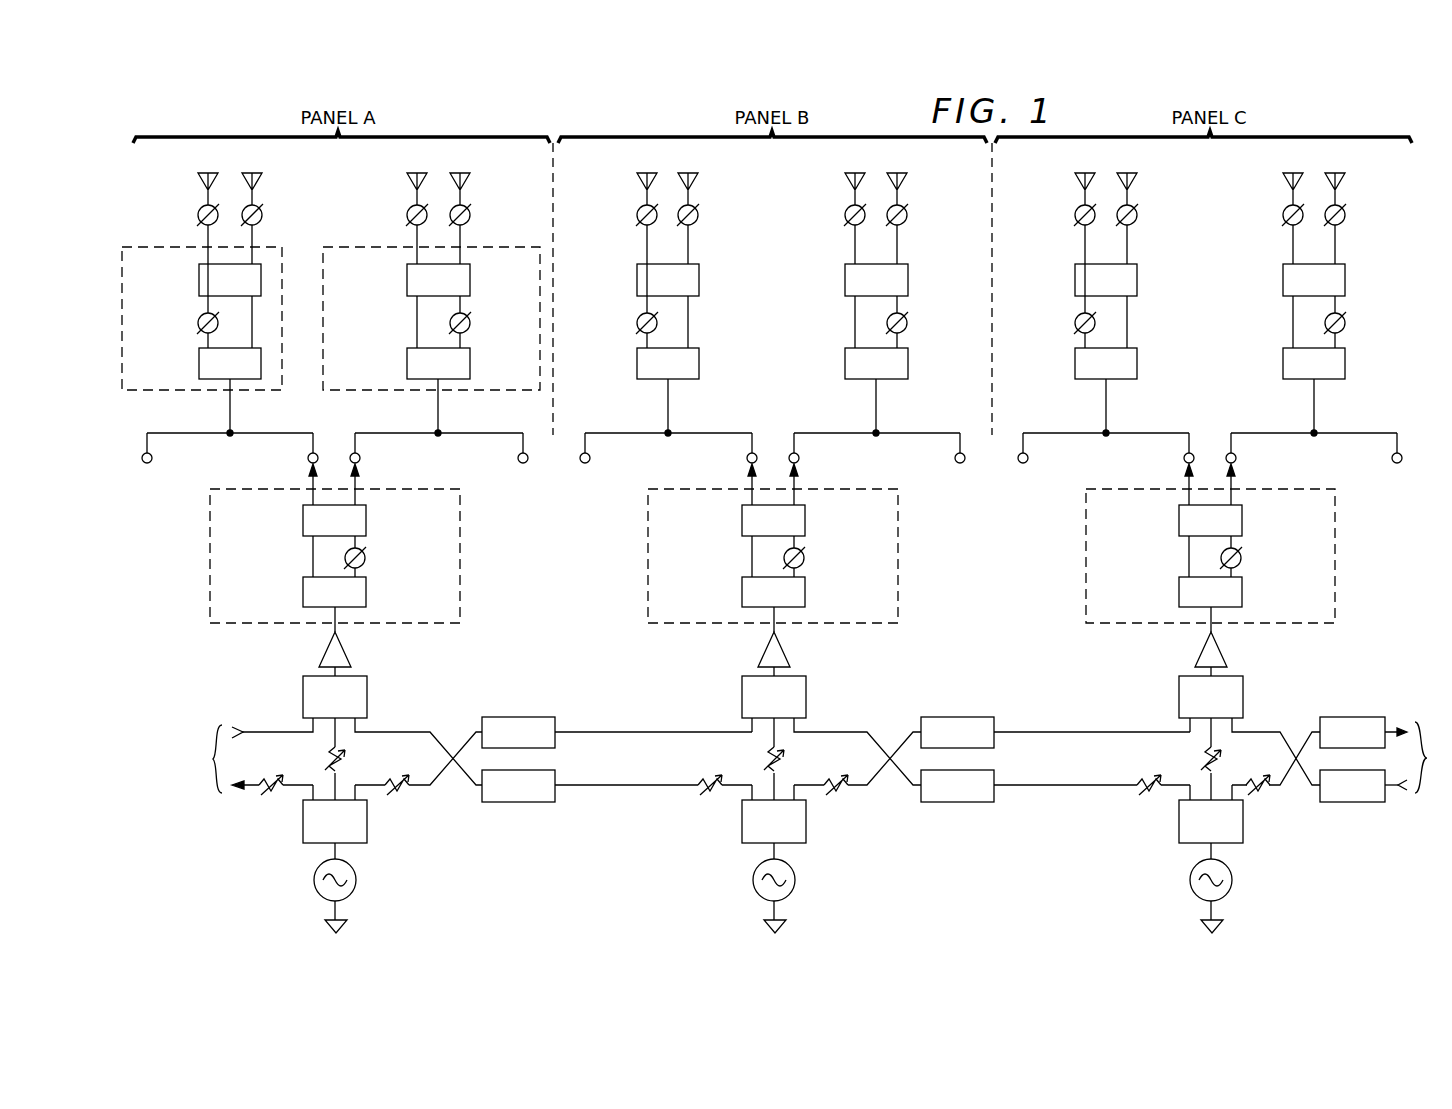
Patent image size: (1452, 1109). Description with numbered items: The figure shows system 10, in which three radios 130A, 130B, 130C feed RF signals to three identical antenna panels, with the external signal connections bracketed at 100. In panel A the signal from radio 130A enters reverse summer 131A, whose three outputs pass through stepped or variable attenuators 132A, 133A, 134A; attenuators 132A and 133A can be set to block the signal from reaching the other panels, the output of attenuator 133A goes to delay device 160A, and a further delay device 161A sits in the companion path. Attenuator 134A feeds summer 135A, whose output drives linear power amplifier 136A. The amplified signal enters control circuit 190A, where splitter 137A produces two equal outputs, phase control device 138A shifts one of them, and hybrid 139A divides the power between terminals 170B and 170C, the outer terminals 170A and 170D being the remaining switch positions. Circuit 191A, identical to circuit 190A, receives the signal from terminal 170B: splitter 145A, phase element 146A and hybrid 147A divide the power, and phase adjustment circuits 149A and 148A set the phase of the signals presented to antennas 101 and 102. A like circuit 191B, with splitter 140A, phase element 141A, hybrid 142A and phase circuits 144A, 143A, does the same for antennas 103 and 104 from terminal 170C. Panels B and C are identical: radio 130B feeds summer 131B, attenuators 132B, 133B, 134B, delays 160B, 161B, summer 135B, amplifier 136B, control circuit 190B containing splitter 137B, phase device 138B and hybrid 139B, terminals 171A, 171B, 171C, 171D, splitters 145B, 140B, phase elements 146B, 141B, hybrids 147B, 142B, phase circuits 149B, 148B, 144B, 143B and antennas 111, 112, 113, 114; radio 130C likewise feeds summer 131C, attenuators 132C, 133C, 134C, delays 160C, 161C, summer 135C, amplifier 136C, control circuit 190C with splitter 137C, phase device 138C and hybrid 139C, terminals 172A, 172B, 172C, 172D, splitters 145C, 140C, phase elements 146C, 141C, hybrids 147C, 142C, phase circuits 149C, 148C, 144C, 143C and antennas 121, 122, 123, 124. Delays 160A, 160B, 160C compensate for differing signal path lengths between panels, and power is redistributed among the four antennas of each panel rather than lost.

The system 10 is at (557, 128).
The beam ports 100 is at (809, 757).
The antenna 101 is at (198, 182).
The antenna 102 is at (262, 182).
The antenna 103 is at (407, 182).
The antenna 104 is at (470, 182).
The antenna element 111 is at (637, 182).
The antenna element 112 is at (698, 182).
The antenna element 113 is at (845, 182).
The antenna element 114 is at (907, 182).
The antenna element 121 is at (1075, 182).
The antenna element 122 is at (1137, 182).
The antenna element 123 is at (1283, 182).
The antenna element 124 is at (1345, 182).
The phase adjustment circuit 149A is at (198, 214).
The phase adjustment circuit 148A is at (262, 214).
The phase shifter 144A is at (407, 213).
The phase shifter 143A is at (470, 214).
The phase shifter 149B is at (637, 214).
The phase shifter 148B is at (698, 214).
The phase shifter 144B is at (845, 213).
The phase shifter 143B is at (907, 214).
The phase shifter 149C is at (1075, 215).
The phase shifter 148C is at (1137, 214).
The phase shifter 144C is at (1283, 213).
The phase shifter 143C is at (1345, 214).
The hybrid 147A is at (199, 278).
The hybrid combiner 147B is at (637, 278).
The hybrid combiner 147C is at (1075, 278).
The hybrid 142A is at (407, 278).
The hybrid combiner 142B is at (845, 278).
The hybrid combiner 142C is at (1283, 278).
The phase adjustment element 146A is at (198, 320).
The phase shifter 146B is at (637, 320).
The phase shifter 146C is at (1075, 320).
The phase adjustment element 141A is at (471, 321).
The phase shifter 141B is at (907, 323).
The phase shifter 141C is at (1345, 323).
The Wilkerson splitter 145A is at (199, 360).
The weighting network 145B is at (637, 360).
The weighting network 145C is at (1075, 360).
The splitter 140A is at (407, 360).
The weighting network 140B is at (845, 360).
The weighting network 140C is at (1283, 360).
The control circuit 191A is at (197, 392).
The subarray beamformer 191B is at (383, 392).
The switch terminal 170A is at (149, 463).
The terminal 170B is at (308, 460).
The terminal 170C is at (360, 460).
The switch terminal 170D is at (521, 463).
The switch terminal 171A is at (587, 463).
The switch terminal 171B is at (747, 460).
The switch terminal 171C is at (799, 460).
The switch terminal 171D is at (958, 463).
The switch terminal 172A is at (1025, 463).
The switch terminal 172B is at (1184, 460).
The switch terminal 172C is at (1236, 460).
The switch terminal 172D is at (1395, 463).
The control circuit 190A is at (210, 580).
The panel beamformer 190B is at (648, 580).
The panel beamformer 190C is at (1335, 580).
The hybrid 139A is at (303, 518).
The hybrid combiner 139B is at (742, 518).
The hybrid combiner 139C is at (1179, 518).
The phase control device 138A is at (366, 560).
The phase shifter 138B is at (805, 560).
The phase shifter 138C is at (1242, 560).
The splitter 137A is at (303, 592).
The weighting network 137B is at (742, 592).
The weighting network 137C is at (1179, 592).
The linear power amplifier 136A is at (352, 650).
The amplifier 136B is at (791, 650).
The amplifier 136C is at (1228, 650).
The summer 135A is at (303, 695).
The summing network 135B is at (742, 695).
The summing network 135C is at (1179, 695).
The attenuator 134A is at (345, 760).
The attenuator 134B is at (784, 760).
The attenuator 134C is at (1201, 762).
The attenuator 133A is at (400, 796).
The attenuator 133B is at (839, 796).
The attenuator 133C is at (1261, 796).
The attenuator 132A is at (270, 796).
The attenuator 132B is at (709, 796).
The attenuator 132C is at (1146, 796).
The reverse summer 131A is at (367, 843).
The summing network 131B is at (806, 843).
The summing network 131C is at (1243, 843).
The radio 130A is at (314, 883).
The radio 130B is at (753, 883).
The radio 130C is at (1190, 883).
The delay device 160A is at (518, 717).
The delay device 160B is at (957, 717).
The delay device 160C is at (1352, 717).
The delay line 161A is at (518, 802).
The delay line 161B is at (957, 802).
The delay line 161C is at (1352, 802).